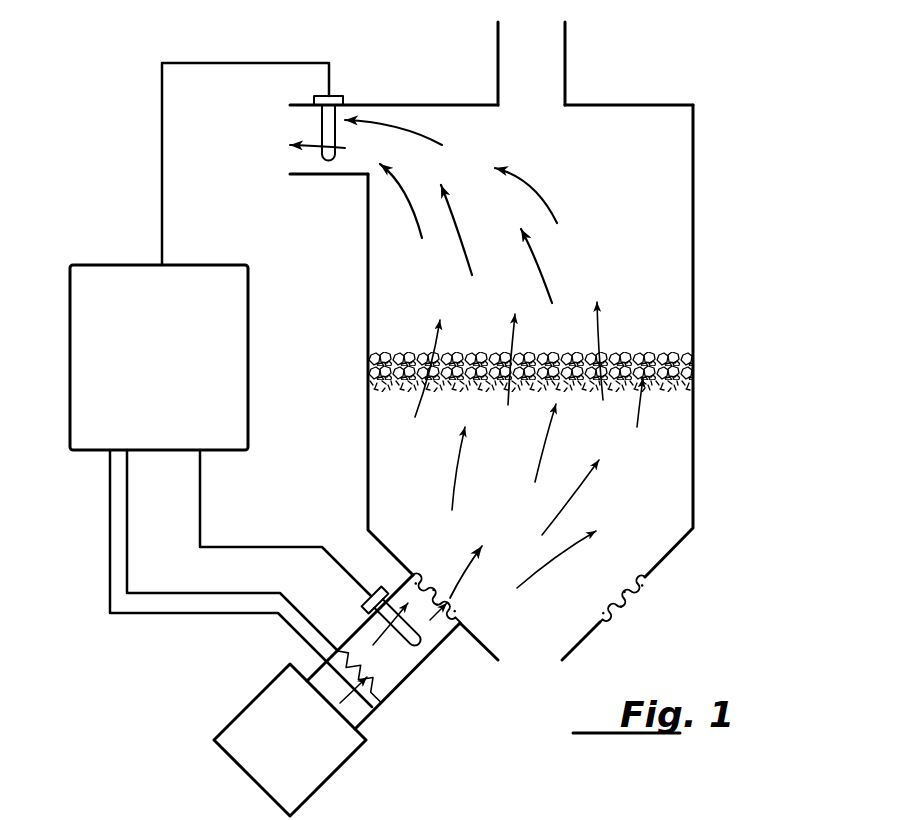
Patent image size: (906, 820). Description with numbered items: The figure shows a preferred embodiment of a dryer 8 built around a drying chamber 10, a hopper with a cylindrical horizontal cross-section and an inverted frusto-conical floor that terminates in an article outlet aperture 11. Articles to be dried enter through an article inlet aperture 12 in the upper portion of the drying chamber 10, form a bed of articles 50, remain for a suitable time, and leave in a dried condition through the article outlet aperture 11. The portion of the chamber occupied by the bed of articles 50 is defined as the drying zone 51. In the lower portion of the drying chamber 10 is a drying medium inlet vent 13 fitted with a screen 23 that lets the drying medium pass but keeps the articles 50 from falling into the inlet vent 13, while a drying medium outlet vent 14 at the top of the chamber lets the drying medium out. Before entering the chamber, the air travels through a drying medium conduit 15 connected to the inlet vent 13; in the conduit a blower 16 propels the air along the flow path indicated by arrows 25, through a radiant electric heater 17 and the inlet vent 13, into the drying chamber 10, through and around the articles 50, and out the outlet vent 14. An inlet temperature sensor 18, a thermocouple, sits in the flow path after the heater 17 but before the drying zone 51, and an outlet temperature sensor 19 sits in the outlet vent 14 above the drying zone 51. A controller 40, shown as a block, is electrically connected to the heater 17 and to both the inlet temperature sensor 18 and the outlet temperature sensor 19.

The dryer 8 is at (737, 133).
The drying chamber 10 is at (695, 267).
The article outlet aperture 11 is at (538, 665).
The article inlet aperture 12 is at (567, 63).
The drying medium inlet vent 13 is at (458, 635).
The drying medium outlet vent 14 is at (323, 167).
The drying medium conduit 15 is at (413, 680).
The blower 16 is at (238, 722).
The heater 17 is at (388, 700).
The inlet temperature sensor 18 is at (396, 605).
The outlet temperature sensor 19 is at (332, 122).
The screen 23 is at (461, 606).
The arrows 25 is at (578, 552).
The controller 40 is at (85, 342).
The bed of articles 50 is at (585, 443).
The drying zone 51 is at (620, 487).